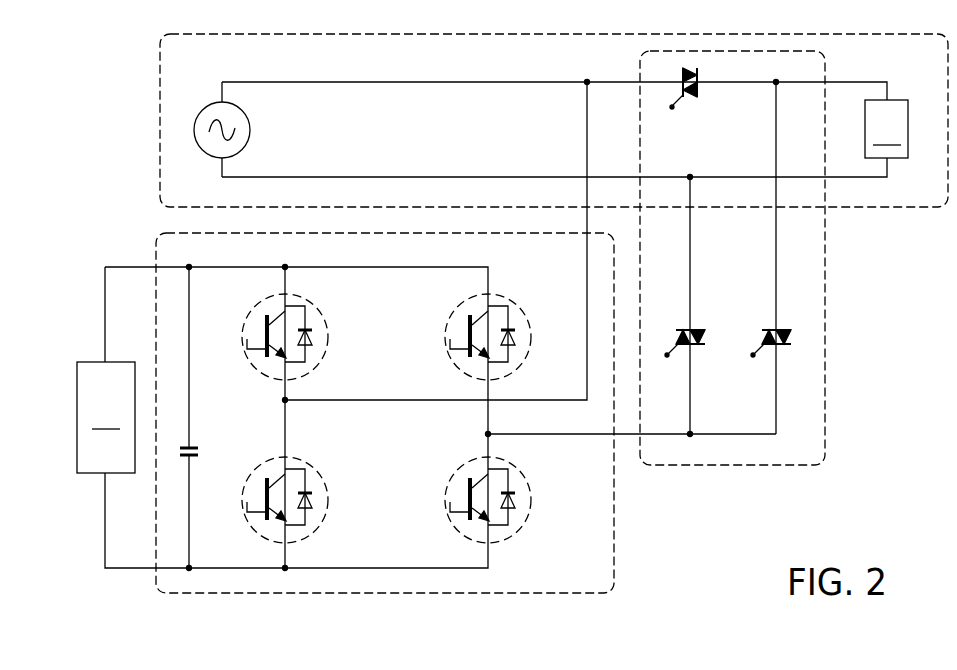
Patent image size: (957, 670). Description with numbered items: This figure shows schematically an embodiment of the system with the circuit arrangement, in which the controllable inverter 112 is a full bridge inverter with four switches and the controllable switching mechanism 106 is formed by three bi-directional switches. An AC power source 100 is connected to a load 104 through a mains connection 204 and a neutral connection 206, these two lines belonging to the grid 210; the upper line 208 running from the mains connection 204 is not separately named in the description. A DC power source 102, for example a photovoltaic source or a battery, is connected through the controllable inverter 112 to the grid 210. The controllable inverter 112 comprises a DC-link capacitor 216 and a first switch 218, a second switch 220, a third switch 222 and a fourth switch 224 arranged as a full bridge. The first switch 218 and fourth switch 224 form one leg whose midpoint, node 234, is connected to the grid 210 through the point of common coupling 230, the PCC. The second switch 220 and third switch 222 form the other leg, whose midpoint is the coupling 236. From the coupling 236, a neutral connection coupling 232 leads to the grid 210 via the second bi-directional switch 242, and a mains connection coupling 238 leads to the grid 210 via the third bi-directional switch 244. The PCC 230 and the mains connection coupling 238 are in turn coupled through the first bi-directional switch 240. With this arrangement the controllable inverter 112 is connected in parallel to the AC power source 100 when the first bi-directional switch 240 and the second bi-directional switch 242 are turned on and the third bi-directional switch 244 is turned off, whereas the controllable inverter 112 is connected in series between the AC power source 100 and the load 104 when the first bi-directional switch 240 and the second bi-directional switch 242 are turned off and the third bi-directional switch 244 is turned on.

The AC power source 100 is at (251, 132).
The DC power source 102 is at (106, 417).
The load 104 is at (886, 129).
The controllable switching mechanism 106 is at (826, 410).
The controllable inverter 112 is at (614, 547).
The mains connection 204 is at (219, 93).
The neutral connection 206 is at (219, 168).
The first line 208 is at (411, 80).
The grid 210 is at (890, 209).
The DC-link capacitor 216 is at (201, 451).
The first switch 218 is at (330, 336).
The second switch 220 is at (533, 499).
The third switch 222 is at (533, 336).
The fourth switch 224 is at (330, 499).
The point of common coupling 230 is at (587, 80).
The neutral connection coupling 232 is at (689, 175).
The first bridge node 234 is at (284, 401).
The coupling 236 is at (486, 433).
The mains connection coupling 238 is at (774, 80).
The first bi-directional switch 240 is at (700, 93).
The second bi-directional switch 242 is at (701, 329).
The third bi-directional switch 244 is at (787, 329).